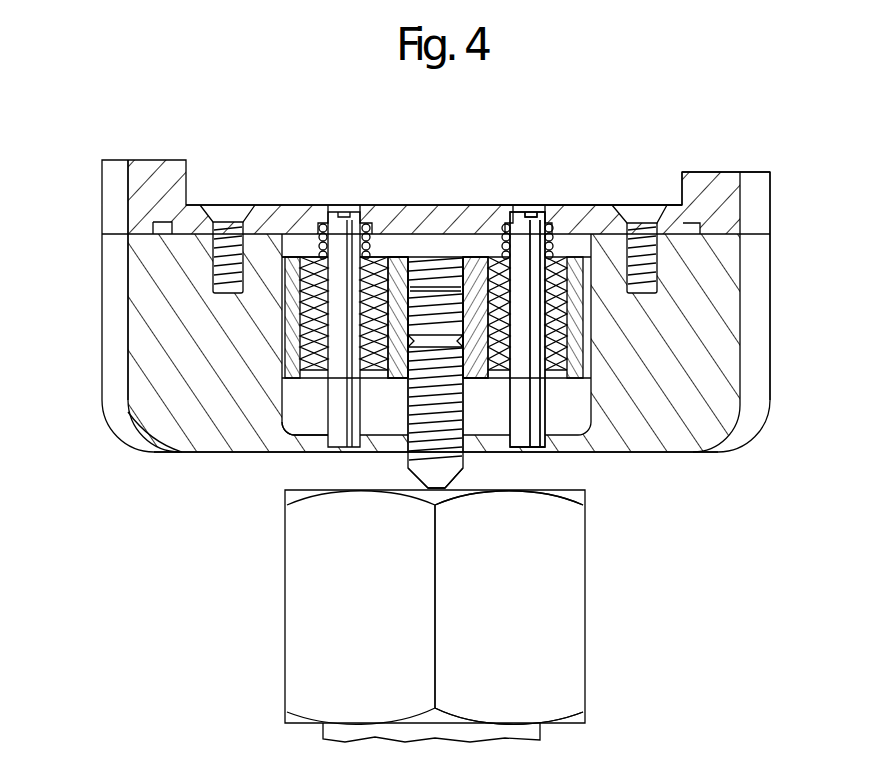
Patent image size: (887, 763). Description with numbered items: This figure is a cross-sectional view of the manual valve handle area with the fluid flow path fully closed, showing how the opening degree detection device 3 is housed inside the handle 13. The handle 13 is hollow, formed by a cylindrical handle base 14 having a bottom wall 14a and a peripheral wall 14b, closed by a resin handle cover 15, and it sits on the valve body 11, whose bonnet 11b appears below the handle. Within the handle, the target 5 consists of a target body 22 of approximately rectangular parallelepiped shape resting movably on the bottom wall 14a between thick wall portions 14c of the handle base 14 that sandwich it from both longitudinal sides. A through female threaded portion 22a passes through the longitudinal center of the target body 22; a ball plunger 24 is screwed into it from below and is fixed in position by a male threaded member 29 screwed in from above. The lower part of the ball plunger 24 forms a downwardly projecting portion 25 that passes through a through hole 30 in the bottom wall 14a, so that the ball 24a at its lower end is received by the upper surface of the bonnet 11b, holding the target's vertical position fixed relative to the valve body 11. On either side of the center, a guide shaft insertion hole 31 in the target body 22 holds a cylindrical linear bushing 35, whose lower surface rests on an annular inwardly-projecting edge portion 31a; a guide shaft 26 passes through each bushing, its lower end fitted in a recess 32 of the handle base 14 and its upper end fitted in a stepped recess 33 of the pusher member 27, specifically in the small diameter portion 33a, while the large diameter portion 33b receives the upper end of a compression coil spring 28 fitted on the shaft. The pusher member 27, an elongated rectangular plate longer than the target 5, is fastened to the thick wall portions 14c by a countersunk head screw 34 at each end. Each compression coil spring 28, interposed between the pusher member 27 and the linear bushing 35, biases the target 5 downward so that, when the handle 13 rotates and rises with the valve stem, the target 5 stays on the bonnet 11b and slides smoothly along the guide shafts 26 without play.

The opening degree detection device 3 is at (590, 146).
The target 5 is at (475, 257).
The valve body 11 is at (585, 650).
The bonnet 11b is at (565, 590).
The handle 13 is at (850, 263).
The handle base 14 is at (690, 430).
The bottom wall 14a is at (297, 455).
The peripheral wall 14b is at (138, 333).
The thick wall portions 14c is at (255, 358).
The handle cover 15 is at (712, 198).
The target body 22 is at (398, 270).
The through female threaded portion 22a is at (432, 268).
The ball plunger 24 is at (460, 397).
The ball 24a is at (440, 487).
The downwardly projecting portion 25 is at (440, 485).
The guide shaft 26 is at (343, 217).
The pusher member 27 is at (290, 207).
The compression coil spring 28 is at (320, 258).
The male threaded member 29 is at (420, 320).
The through hole 30 is at (408, 472).
The guide shaft insertion hole 31 is at (305, 255).
The inwardly-projecting edge portion 31a is at (300, 437).
The recess 32 is at (543, 447).
The recess 33 is at (538, 210).
The small diameter portion 33a is at (528, 213).
The large diameter portion 33b is at (550, 215).
The countersunk head screw 34 is at (622, 210).
The linear bushing 35 is at (255, 358).